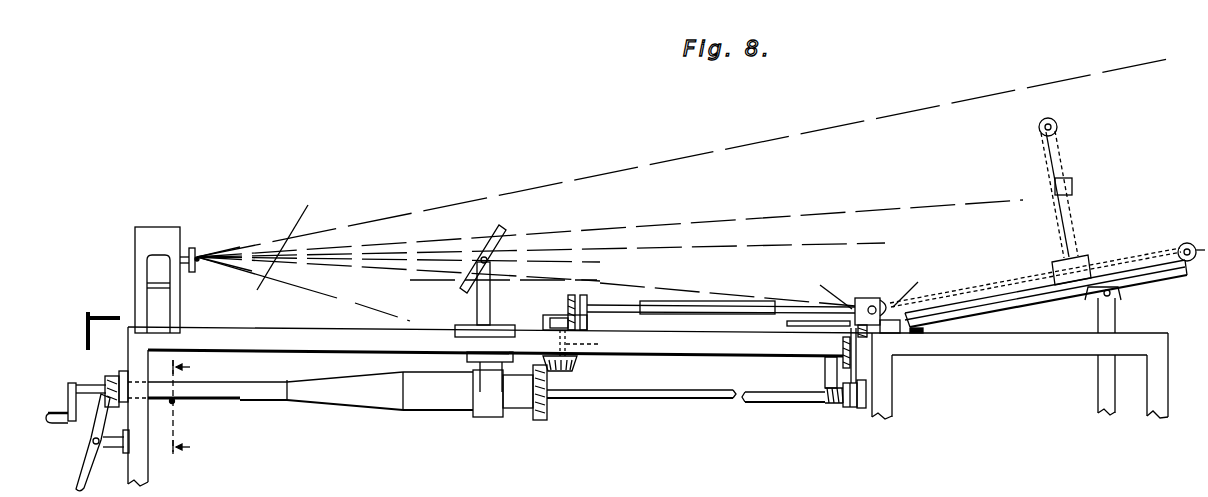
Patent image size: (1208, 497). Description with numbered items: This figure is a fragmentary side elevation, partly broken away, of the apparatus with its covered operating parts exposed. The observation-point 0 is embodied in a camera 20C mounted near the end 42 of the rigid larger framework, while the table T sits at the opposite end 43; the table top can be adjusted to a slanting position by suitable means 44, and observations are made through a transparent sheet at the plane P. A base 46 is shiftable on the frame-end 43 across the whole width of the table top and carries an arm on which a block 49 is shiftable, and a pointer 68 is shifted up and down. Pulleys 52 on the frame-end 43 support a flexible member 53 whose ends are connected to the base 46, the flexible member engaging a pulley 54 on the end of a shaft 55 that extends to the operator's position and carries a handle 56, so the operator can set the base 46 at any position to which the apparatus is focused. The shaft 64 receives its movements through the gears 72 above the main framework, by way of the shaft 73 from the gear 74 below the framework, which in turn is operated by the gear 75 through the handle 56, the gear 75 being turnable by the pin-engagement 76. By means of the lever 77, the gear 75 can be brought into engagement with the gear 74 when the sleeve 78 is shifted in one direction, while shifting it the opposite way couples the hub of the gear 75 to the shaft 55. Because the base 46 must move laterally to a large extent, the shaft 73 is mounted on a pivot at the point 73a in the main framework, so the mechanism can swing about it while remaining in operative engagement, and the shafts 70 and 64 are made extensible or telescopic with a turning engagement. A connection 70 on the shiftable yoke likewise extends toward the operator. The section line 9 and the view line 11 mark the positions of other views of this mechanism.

The camera 20C is at (157, 238).
The observation-point 0 is at (198, 252).
The connection 70 is at (105, 312).
The end of framework 42 is at (128, 355).
The section line 9- 9 is at (191, 411).
The handle 56 is at (70, 406).
The pin-engagement 76 is at (176, 404).
The lever 77 is at (87, 479).
The sleeve 78 is at (313, 402).
The gear 75 is at (546, 414).
The adjusting means for table top 44 is at (481, 326).
The plane P is at (505, 233).
The gears 72 is at (566, 309).
The shaft 73 is at (566, 341).
The pivot point 73a is at (602, 344).
The gear 74 is at (578, 367).
The shaft 55 is at (730, 400).
The pulley 54 is at (849, 408).
The flexible member 53 is at (845, 377).
The pulleys 52 is at (843, 348).
The shaft 64 is at (800, 304).
The base 46 is at (867, 298).
The view line 11- 11 is at (830, 290).
The end of framework 43 is at (920, 348).
The table T is at (1150, 283).
The block 49 is at (1085, 258).
The pointer 68 is at (1073, 187).